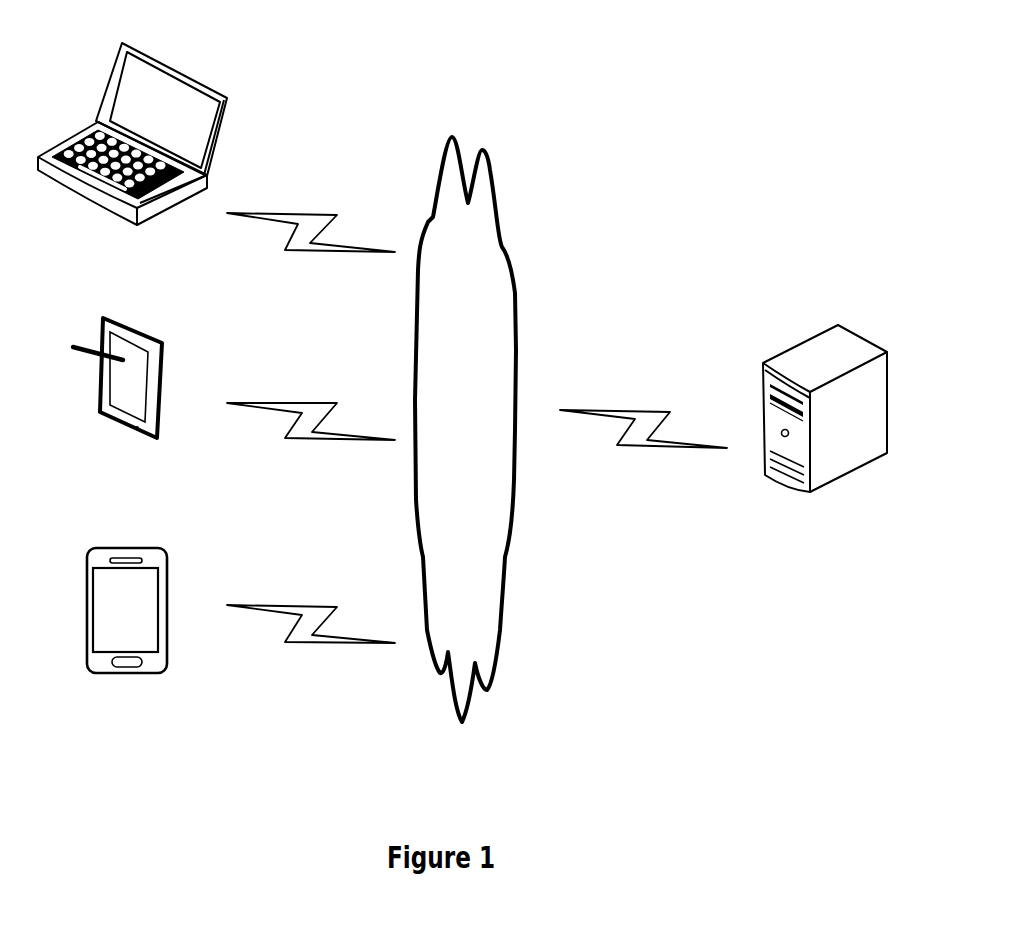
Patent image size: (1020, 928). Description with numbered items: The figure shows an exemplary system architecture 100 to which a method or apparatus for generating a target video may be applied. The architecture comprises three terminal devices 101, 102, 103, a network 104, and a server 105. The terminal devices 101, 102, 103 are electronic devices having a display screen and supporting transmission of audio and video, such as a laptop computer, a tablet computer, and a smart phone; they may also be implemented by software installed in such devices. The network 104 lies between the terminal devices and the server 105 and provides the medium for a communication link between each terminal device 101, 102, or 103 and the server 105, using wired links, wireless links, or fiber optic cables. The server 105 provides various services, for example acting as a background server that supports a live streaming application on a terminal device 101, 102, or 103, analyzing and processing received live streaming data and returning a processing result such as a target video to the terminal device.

The system architecture 100 is at (707, 31).
The terminal device 101 is at (132, 157).
The terminal device 102 is at (117, 401).
The terminal device 103 is at (127, 635).
The network 104 is at (465, 429).
The server 105 is at (825, 431).